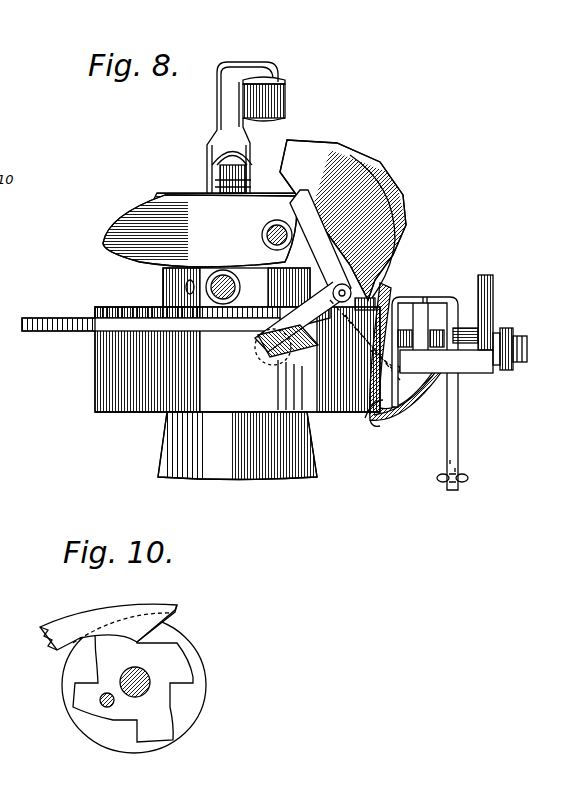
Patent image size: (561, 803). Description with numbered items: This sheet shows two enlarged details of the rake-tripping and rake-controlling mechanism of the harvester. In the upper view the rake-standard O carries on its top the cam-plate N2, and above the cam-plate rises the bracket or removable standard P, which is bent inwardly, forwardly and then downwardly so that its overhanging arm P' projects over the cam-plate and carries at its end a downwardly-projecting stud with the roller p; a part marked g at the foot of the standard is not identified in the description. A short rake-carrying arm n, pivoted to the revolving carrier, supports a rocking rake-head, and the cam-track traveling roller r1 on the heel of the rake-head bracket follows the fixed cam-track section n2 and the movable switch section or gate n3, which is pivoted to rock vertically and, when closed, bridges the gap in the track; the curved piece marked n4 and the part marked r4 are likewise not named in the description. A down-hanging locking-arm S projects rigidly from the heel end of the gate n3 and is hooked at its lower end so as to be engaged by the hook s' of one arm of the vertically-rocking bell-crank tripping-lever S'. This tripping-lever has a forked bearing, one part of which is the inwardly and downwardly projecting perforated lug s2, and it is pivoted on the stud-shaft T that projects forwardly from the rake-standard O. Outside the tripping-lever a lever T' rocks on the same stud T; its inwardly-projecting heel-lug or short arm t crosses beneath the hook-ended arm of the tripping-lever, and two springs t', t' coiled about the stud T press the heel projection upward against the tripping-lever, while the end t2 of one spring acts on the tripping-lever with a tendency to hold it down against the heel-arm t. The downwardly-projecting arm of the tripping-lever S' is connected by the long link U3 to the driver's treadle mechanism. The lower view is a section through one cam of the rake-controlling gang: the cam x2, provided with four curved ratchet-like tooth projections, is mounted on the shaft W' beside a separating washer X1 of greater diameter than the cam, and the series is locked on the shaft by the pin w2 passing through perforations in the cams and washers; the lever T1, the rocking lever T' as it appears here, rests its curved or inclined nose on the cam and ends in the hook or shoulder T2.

In FIG. 8, the bracket or removable standard P is at (234, 127).
In FIG. 8, the overhanging arm P' is at (267, 68).
In FIG. 8, the roller p is at (269, 102).
In FIG. 8, the pen arm socket g is at (251, 178).
In FIG. 8, the cam-plate N2 is at (206, 250).
In FIG. 8, the cam-track traveling roller r1 is at (272, 231).
In FIG. 8, the rake-carrying arm n is at (222, 287).
In FIG. 8, the cam-track section n2 is at (176, 320).
In FIG. 8, the switch section or gate n3 is at (327, 285).
In FIG. 8, the curved blade n4 is at (343, 220).
In FIG. 8, the lever head r4 is at (286, 349).
In FIG. 8, the rake-standard O is at (237, 394).
In FIG. 8, the locking-arm S is at (376, 351).
In FIG. 8, the tripping-lever S' is at (412, 390).
In FIG. 8, the hook s' is at (379, 432).
In FIG. 8, the perforated lug s2 is at (398, 373).
In FIG. 8, the springs t' is at (425, 393).
In FIG. 8, the spring end t2 is at (425, 300).
In FIG. 8, the heel-lug or short arm t is at (446, 373).
In FIG. 8, the lever T' is at (484, 312).
In FIG. 8, the stud-shaft T is at (518, 349).
In FIG. 8, the long link U3 is at (461, 475).
In FIG. 10, the separating washer X1 is at (200, 691).
In FIG. 10, the cam-wheel x2 is at (133, 683).
In FIG. 10, the shaft W' is at (140, 691).
In FIG. 10, the pin w2 is at (100, 706).
In FIG. 10, the lever T1 is at (80, 614).
In FIG. 10, the hook or shoulder T2 is at (177, 605).